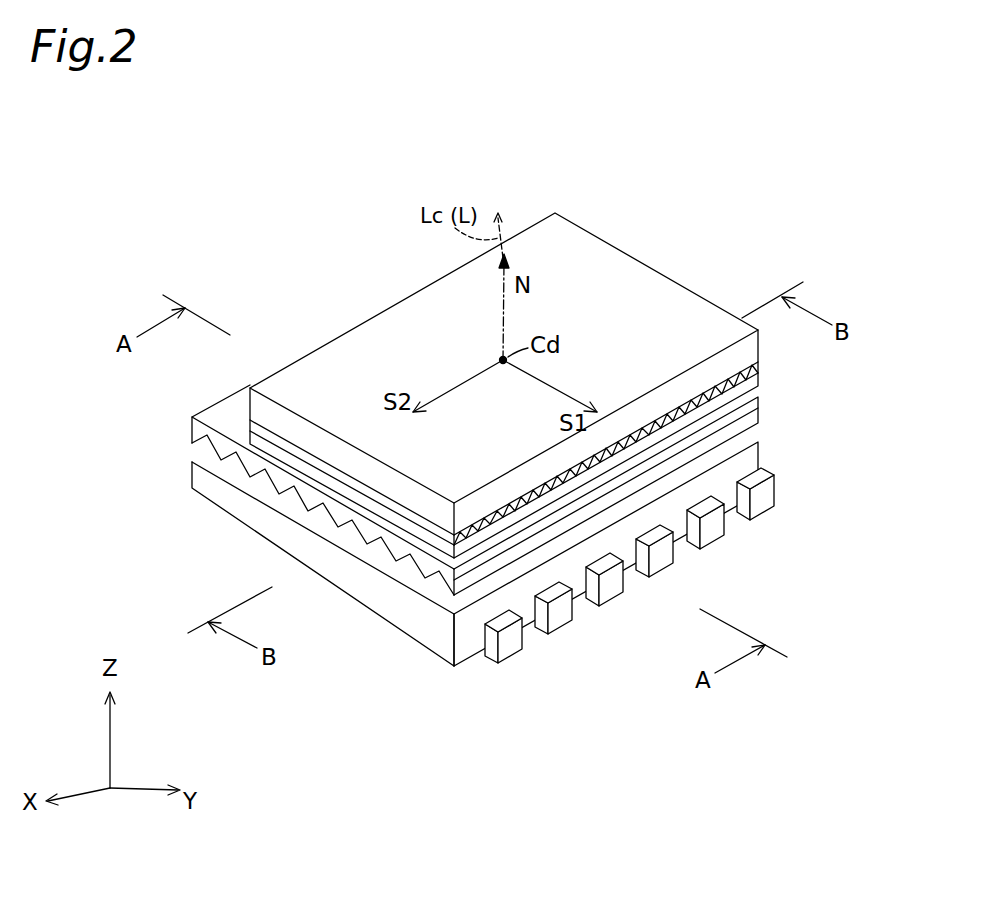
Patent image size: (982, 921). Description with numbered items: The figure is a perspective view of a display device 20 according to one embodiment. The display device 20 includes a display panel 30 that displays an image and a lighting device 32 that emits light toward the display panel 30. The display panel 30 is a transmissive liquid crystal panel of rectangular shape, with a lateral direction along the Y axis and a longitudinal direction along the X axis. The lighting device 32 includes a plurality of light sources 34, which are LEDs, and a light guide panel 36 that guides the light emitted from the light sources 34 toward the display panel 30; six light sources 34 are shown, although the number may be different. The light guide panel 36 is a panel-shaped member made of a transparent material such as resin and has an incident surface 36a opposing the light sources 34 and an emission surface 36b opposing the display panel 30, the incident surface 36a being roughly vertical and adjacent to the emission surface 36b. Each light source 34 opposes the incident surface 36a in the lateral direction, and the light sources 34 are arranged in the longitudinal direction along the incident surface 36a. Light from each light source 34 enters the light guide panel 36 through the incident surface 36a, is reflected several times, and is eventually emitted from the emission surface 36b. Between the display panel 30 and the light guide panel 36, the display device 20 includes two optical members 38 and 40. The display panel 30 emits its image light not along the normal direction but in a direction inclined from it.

The display device 20 is at (700, 272).
The display panel 30 is at (385, 328).
The lighting device 32 is at (383, 650).
The light sources 34 is at (512, 643).
The light guide panel 36 is at (258, 522).
The incident surface 36a is at (468, 630).
The emission surface 36b is at (237, 472).
The optical member 38 is at (192, 431).
The optical member 40 is at (750, 387).